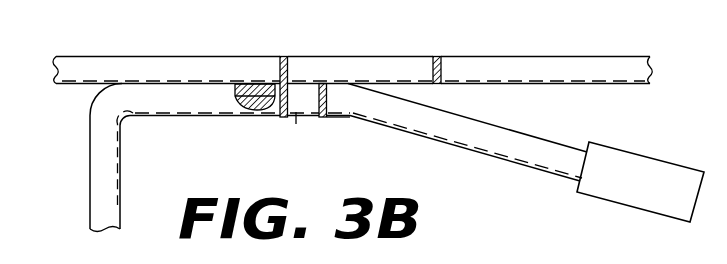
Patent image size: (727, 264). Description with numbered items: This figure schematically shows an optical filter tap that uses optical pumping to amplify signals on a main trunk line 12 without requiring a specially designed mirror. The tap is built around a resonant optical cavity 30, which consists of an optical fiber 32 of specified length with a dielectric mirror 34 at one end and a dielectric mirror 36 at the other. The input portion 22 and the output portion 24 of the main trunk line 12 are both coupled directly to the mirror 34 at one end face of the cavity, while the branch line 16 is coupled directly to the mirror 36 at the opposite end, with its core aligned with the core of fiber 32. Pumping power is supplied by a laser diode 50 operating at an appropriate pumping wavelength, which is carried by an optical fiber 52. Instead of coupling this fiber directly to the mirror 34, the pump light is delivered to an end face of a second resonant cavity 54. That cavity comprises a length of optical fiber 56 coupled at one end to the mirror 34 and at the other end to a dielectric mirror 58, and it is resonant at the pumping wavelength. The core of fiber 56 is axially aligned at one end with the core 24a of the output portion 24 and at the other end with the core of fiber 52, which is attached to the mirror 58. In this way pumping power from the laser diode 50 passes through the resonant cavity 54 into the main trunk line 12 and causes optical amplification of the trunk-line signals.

The main trunk line 12 is at (71, 110).
The branch line 16 is at (518, 56).
The input portion 22 is at (188, 56).
The output portion 24 is at (191, 116).
The core 24a is at (256, 109).
The resonant optical cavity 30 is at (328, 40).
The optical fiber 32 is at (401, 56).
The dielectric mirror 34 is at (284, 56).
The dielectric mirror 36 is at (436, 56).
The laser diode 50 is at (621, 204).
The optical fiber 52 is at (483, 153).
The resonant cavity 54 is at (296, 124).
The optical fiber 56 is at (308, 118).
The dielectric mirror 58 is at (324, 118).